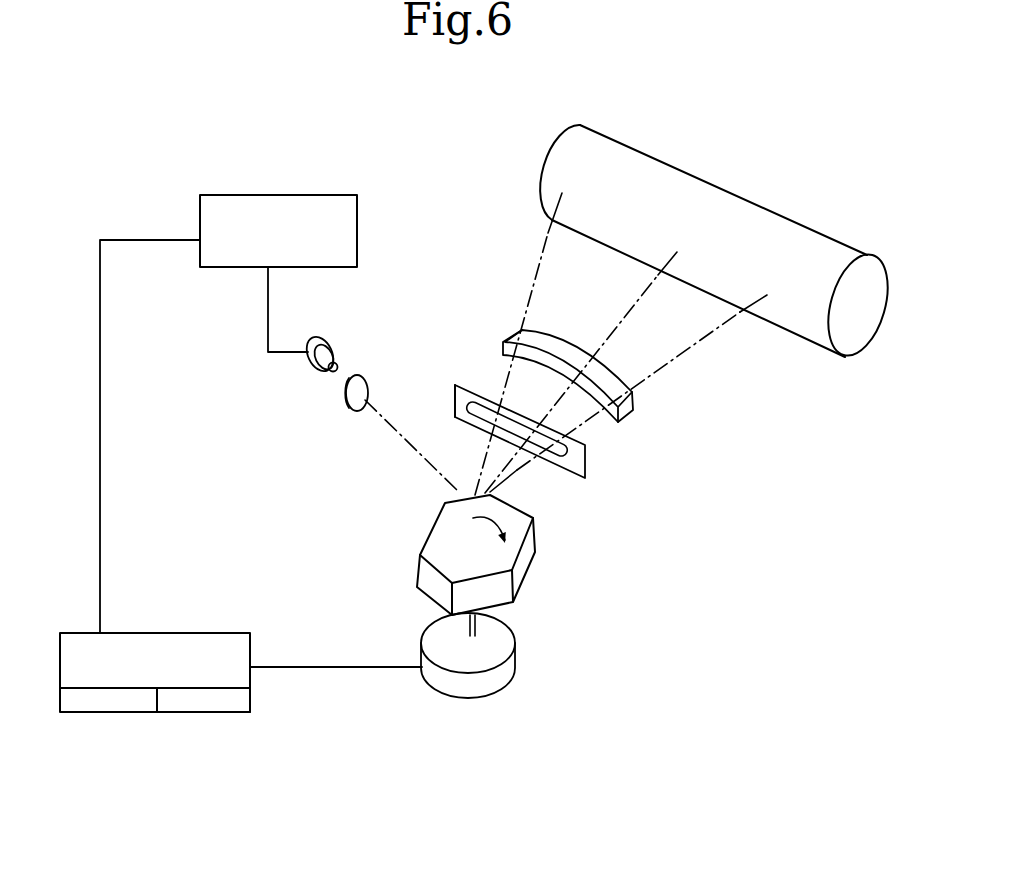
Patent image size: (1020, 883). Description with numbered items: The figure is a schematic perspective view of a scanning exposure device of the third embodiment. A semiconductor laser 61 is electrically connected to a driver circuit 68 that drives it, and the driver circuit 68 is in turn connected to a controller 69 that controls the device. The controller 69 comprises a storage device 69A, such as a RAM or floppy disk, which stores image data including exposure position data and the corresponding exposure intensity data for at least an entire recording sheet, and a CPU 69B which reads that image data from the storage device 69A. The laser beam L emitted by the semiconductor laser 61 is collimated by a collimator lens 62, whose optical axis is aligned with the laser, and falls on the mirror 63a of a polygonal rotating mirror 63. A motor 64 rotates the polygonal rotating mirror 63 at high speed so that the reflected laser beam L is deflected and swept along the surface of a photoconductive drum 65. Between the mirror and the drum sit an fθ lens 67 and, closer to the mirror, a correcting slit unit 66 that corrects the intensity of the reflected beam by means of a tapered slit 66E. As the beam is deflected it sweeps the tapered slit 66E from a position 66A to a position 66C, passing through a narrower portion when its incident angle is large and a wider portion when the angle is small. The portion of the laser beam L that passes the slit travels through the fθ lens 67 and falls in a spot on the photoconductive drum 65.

The semiconductor laser 61 is at (305, 368).
The collimator lens 62 is at (343, 410).
The polygonal rotating mirror 63 is at (476, 555).
The mirror 63a is at (495, 595).
The motor 64 is at (495, 680).
The photoconductive drum 65 is at (827, 232).
The correcting slit unit 66 is at (536, 431).
The position 66A is at (547, 486).
The position 66C is at (527, 518).
The tapered slit 66E is at (455, 402).
The fθ lens 67 is at (633, 412).
The driver circuit 68 is at (342, 202).
The controller 69 is at (196, 675).
The storage device 69A is at (123, 702).
The CPU 69B is at (243, 700).
The laser beam L is at (385, 427).